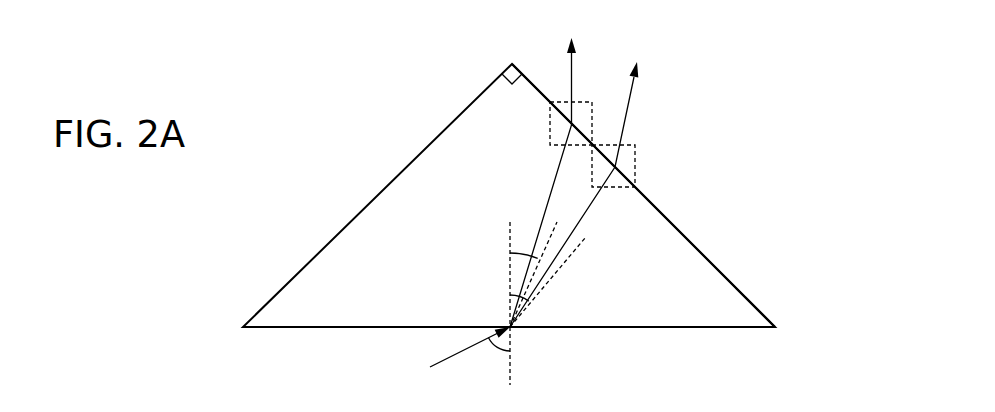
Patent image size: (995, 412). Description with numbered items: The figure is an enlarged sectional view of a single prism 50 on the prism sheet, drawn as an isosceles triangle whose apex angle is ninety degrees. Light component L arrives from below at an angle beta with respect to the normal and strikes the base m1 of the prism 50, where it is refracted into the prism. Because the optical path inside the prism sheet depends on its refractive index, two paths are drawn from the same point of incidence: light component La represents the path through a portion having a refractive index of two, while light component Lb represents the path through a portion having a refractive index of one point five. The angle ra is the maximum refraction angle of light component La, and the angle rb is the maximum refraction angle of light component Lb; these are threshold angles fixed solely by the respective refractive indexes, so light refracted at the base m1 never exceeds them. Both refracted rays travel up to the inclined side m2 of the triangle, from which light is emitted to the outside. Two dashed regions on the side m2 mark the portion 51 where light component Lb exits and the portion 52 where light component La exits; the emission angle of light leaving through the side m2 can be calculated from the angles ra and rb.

The prism 50 is at (355, 20).
The portion of the side m2 51 is at (635, 147).
The portion of the side m2 52 is at (593, 102).
The base m1 is at (618, 328).
The side m2 is at (678, 228).
The light component L is at (462, 353).
The light component La is at (547, 171).
The light component Lb is at (581, 184).
The angle ra is at (538, 258).
The angle rb is at (529, 301).